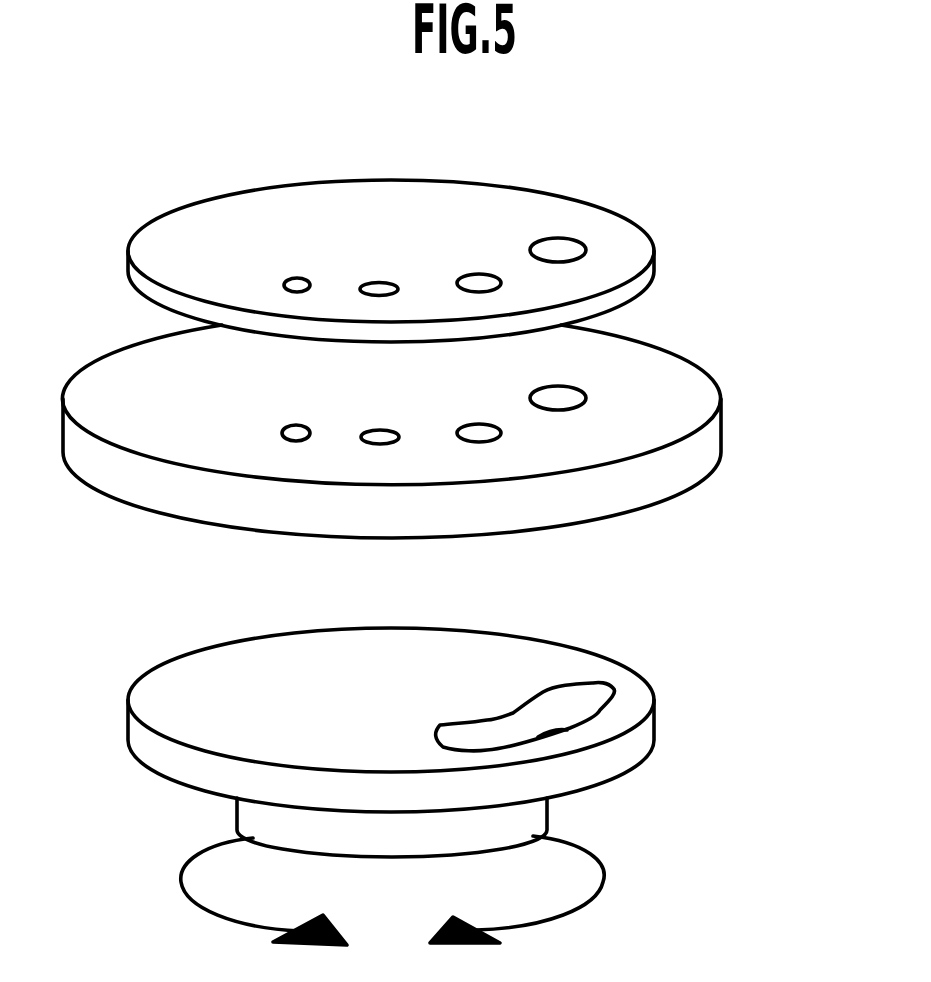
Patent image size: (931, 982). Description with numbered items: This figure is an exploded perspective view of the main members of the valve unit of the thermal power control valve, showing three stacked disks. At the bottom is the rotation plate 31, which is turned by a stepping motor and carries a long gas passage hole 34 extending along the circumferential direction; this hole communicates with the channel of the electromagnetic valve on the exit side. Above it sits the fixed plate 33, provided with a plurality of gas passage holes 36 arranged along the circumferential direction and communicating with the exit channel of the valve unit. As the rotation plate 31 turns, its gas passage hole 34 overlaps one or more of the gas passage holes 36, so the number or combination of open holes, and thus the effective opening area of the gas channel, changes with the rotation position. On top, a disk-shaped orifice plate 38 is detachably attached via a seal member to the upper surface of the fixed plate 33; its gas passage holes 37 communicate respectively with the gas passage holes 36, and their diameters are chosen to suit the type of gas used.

The rotation plate 31 is at (202, 688).
The fixed plate 33 is at (658, 380).
The gas passage hole 34 is at (553, 707).
The gas passage holes 36 is at (587, 387).
The gas passage holes 37 is at (585, 238).
The orifice plate 38 is at (597, 226).